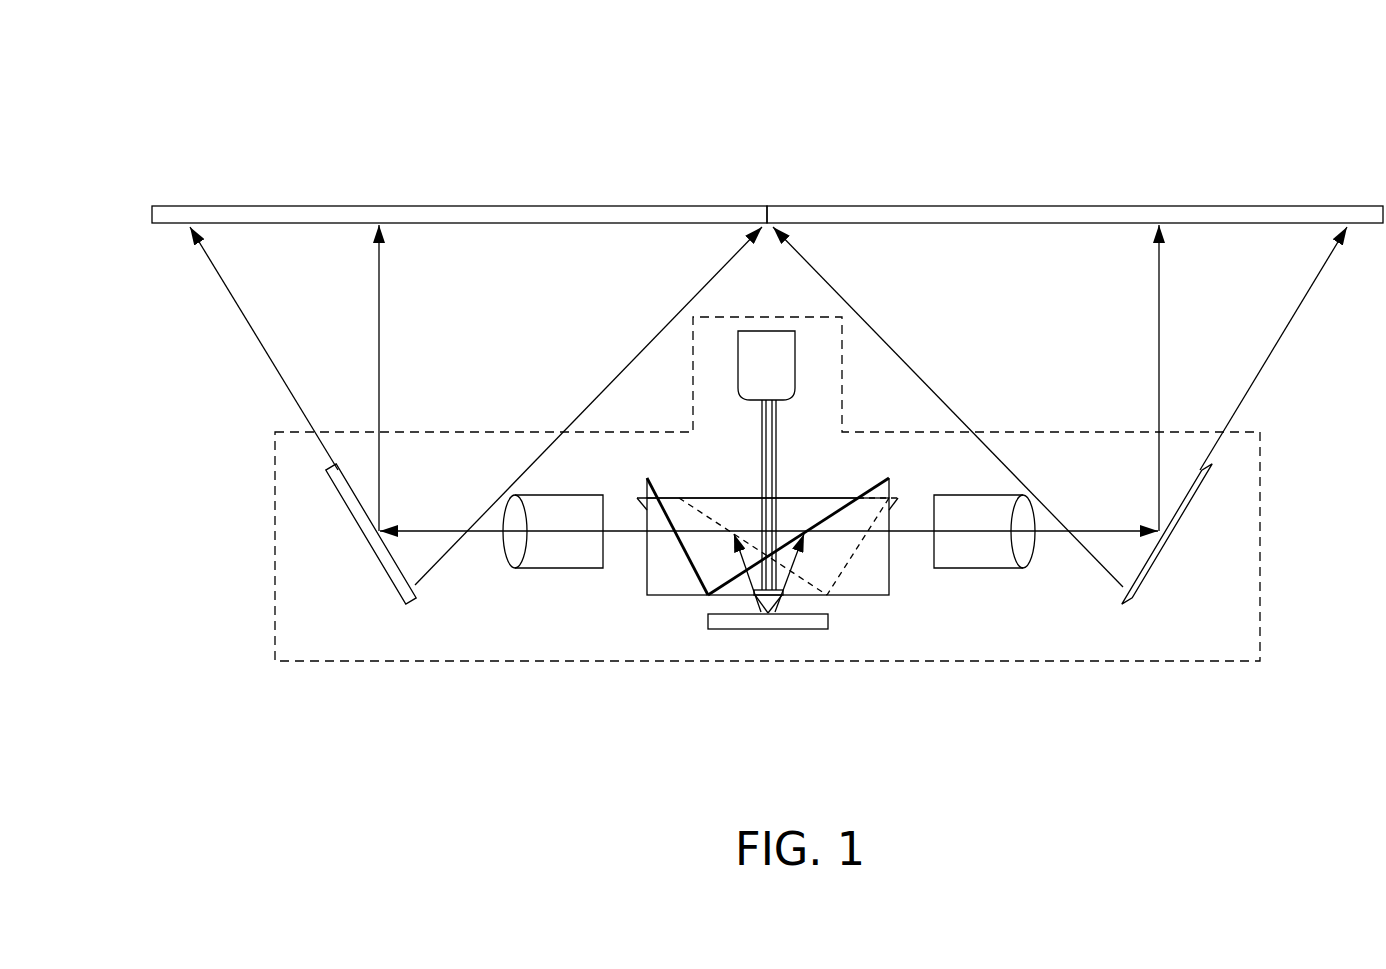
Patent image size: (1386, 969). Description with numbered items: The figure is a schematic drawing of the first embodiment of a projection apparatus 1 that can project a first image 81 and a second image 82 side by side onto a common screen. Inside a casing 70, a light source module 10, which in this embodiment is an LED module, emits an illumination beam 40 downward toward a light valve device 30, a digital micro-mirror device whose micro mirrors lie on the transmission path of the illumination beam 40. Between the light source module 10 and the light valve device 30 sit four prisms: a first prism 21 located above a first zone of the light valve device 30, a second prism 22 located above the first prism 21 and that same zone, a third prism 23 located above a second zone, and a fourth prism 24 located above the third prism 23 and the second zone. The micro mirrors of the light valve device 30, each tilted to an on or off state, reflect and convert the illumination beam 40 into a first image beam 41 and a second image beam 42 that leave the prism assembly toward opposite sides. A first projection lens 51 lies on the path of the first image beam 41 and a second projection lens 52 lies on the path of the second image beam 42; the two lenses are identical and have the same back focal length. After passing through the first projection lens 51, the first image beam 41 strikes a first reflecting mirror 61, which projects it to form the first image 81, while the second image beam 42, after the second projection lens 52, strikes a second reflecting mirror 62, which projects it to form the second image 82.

The projection apparatus 1 is at (1305, 132).
The light source module 10 is at (757, 378).
The first prism 21 is at (888, 583).
The second prism 22 is at (818, 497).
The third prism 23 is at (647, 567).
The fourth prism 24 is at (889, 500).
The light valve device 30 is at (766, 629).
The illumination beam 40 is at (777, 430).
The first image beam 41 is at (792, 590).
The second image beam 42 is at (742, 590).
The first projection lens 51 is at (989, 557).
The second projection lens 52 is at (551, 560).
The first reflecting mirror 61 is at (1165, 551).
The second reflecting mirror 62 is at (374, 560).
The casing 70 is at (275, 548).
The first image 81 is at (1010, 206).
The second image 82 is at (533, 206).